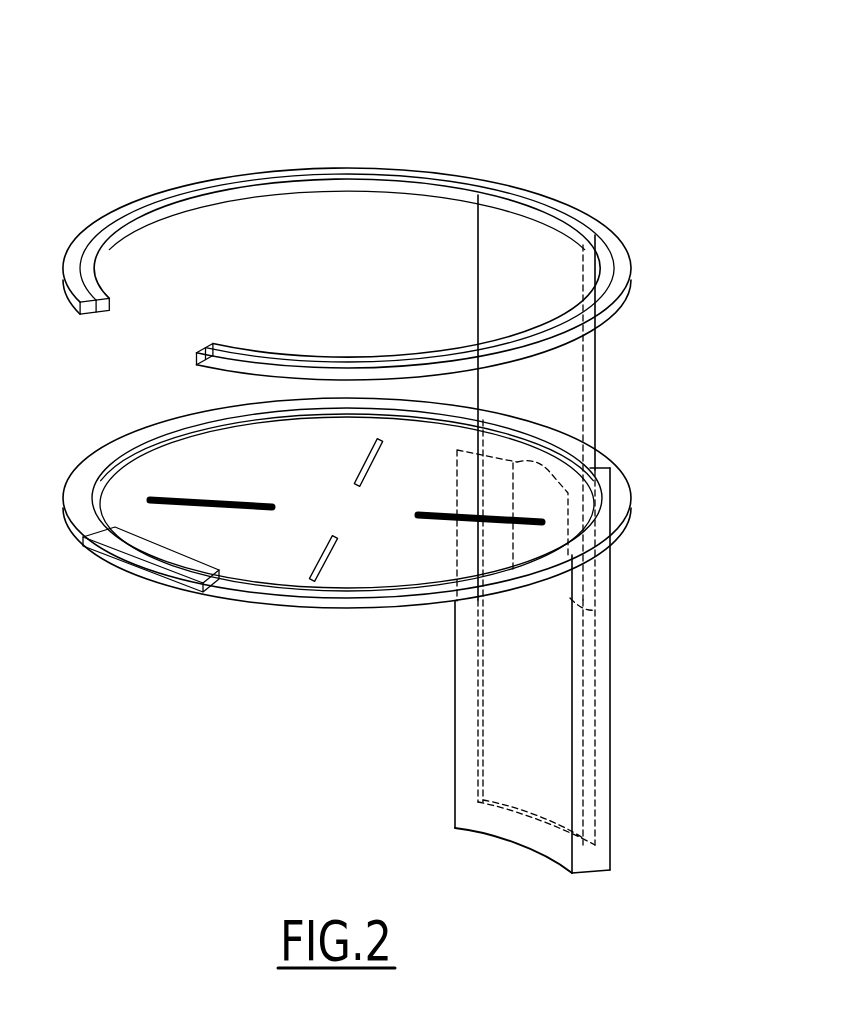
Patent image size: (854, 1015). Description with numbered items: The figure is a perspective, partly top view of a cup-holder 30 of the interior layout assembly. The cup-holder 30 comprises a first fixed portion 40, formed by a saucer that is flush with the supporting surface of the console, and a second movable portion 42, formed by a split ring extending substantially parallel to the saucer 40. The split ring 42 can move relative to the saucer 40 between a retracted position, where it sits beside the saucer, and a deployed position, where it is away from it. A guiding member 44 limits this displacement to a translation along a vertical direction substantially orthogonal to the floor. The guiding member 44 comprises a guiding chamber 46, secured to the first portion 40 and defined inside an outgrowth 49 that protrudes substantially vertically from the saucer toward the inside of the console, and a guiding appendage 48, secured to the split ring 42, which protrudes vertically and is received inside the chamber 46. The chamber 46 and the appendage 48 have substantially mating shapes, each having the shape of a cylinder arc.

The cup-holder 30 is at (567, 102).
The second movable portion 42 is at (238, 163).
The first fixed portion 40 is at (237, 613).
The guiding member 44 is at (602, 428).
The guiding appendage 48 is at (593, 350).
The guiding chamber 46 is at (588, 818).
The outgrowth 49 is at (513, 827).